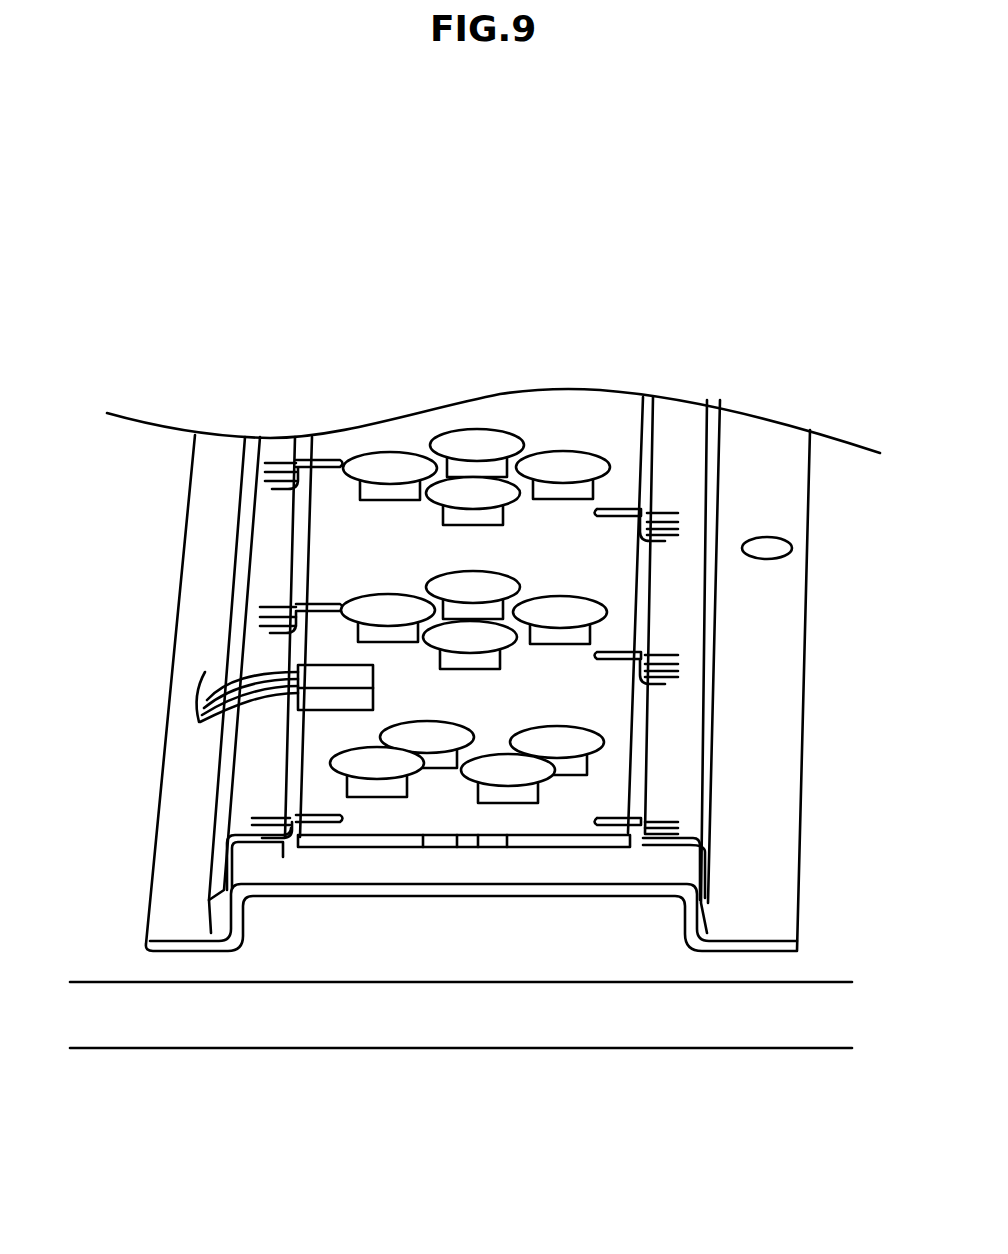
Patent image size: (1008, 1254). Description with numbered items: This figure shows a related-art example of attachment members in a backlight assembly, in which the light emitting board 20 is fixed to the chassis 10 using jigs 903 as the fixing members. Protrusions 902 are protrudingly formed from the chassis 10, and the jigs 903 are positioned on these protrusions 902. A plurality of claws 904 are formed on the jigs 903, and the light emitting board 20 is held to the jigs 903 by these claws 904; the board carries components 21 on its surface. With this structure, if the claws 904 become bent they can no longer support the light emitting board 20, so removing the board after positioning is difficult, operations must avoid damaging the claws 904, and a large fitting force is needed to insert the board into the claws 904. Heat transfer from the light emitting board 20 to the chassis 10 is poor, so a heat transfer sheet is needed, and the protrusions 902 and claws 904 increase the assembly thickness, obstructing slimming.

The chassis 10 is at (657, 960).
The light emitting board 20 is at (555, 418).
The electronic components 21 is at (427, 737).
The protrusions 902 is at (165, 877).
The jigs 903 is at (223, 757).
The claws 904 is at (310, 460).